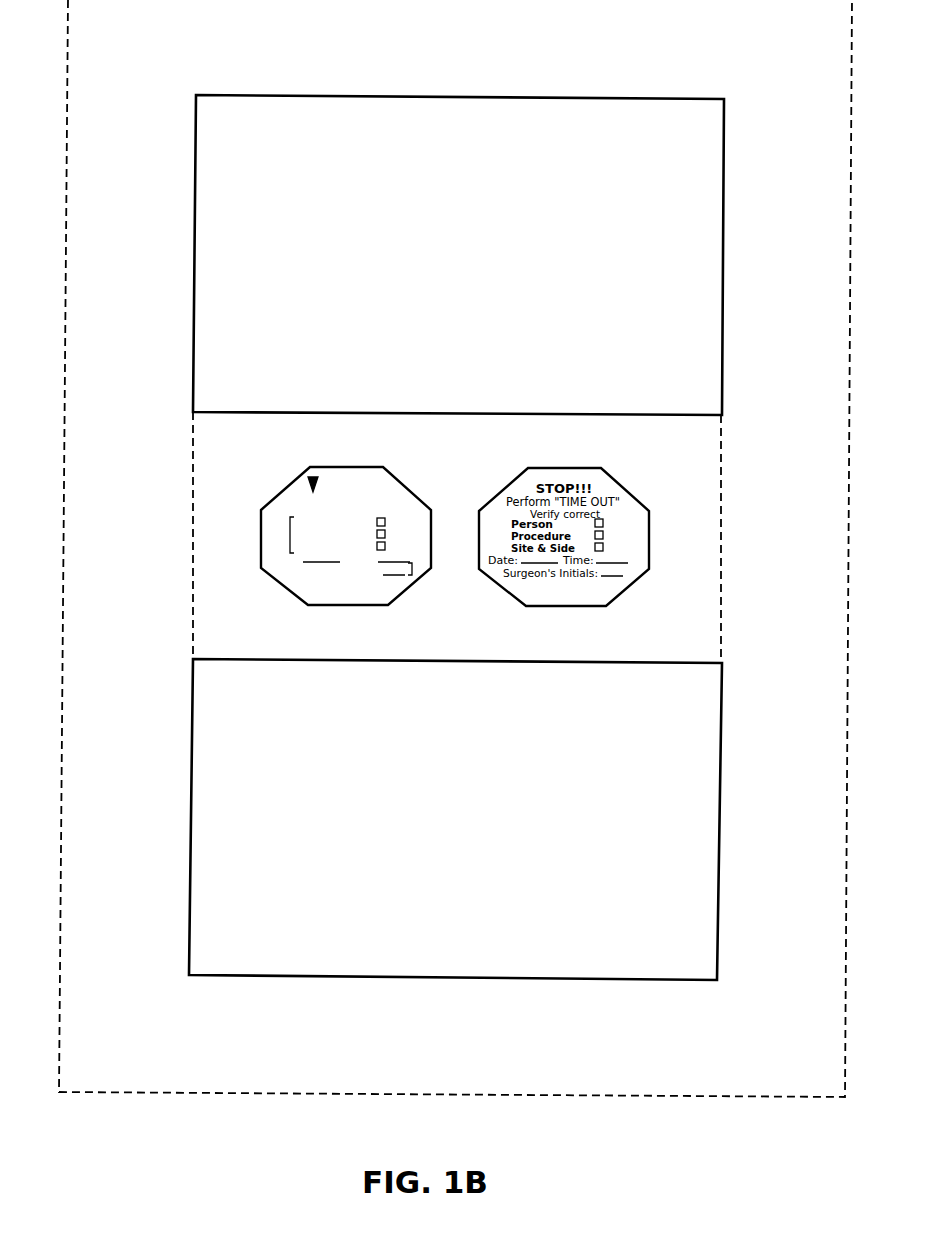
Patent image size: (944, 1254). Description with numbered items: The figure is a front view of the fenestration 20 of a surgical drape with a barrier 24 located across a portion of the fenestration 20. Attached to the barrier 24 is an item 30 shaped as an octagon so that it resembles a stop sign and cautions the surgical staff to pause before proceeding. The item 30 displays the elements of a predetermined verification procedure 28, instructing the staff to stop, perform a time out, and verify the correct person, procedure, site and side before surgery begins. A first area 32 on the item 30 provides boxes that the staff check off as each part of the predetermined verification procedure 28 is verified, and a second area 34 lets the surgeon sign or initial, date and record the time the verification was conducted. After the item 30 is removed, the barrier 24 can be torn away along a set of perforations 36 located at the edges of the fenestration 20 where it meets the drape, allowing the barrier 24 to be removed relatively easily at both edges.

The fenestration 20 is at (643, 128).
The barrier 24 is at (700, 451).
The predetermined verification procedure 28 is at (311, 479).
The item 30 is at (276, 594).
The first area 32 is at (290, 535).
The second area 34 is at (413, 570).
The set of perforations 36 is at (193, 556).